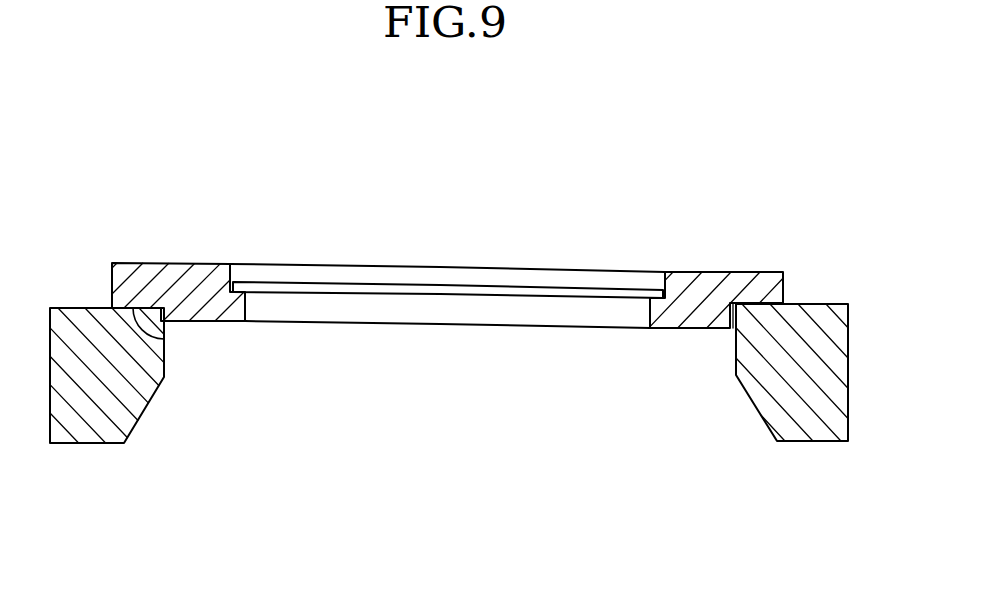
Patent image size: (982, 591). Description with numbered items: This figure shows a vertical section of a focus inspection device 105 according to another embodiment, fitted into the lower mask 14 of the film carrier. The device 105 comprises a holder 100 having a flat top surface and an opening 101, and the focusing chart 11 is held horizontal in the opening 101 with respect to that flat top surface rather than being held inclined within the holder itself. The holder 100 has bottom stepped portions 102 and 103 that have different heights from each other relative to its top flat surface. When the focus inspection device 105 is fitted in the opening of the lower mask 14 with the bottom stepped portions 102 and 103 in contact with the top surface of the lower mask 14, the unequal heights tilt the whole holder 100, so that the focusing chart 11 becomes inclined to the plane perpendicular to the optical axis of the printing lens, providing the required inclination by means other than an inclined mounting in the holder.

The focus inspection device 105 is at (174, 252).
The opening 101 is at (281, 275).
The focusing chart 11 is at (343, 288).
The holder 100 is at (682, 271).
The bottom stepped portion 102 is at (163, 338).
The bottom stepped portion 103 is at (732, 306).
The lower mask 14 is at (89, 452).